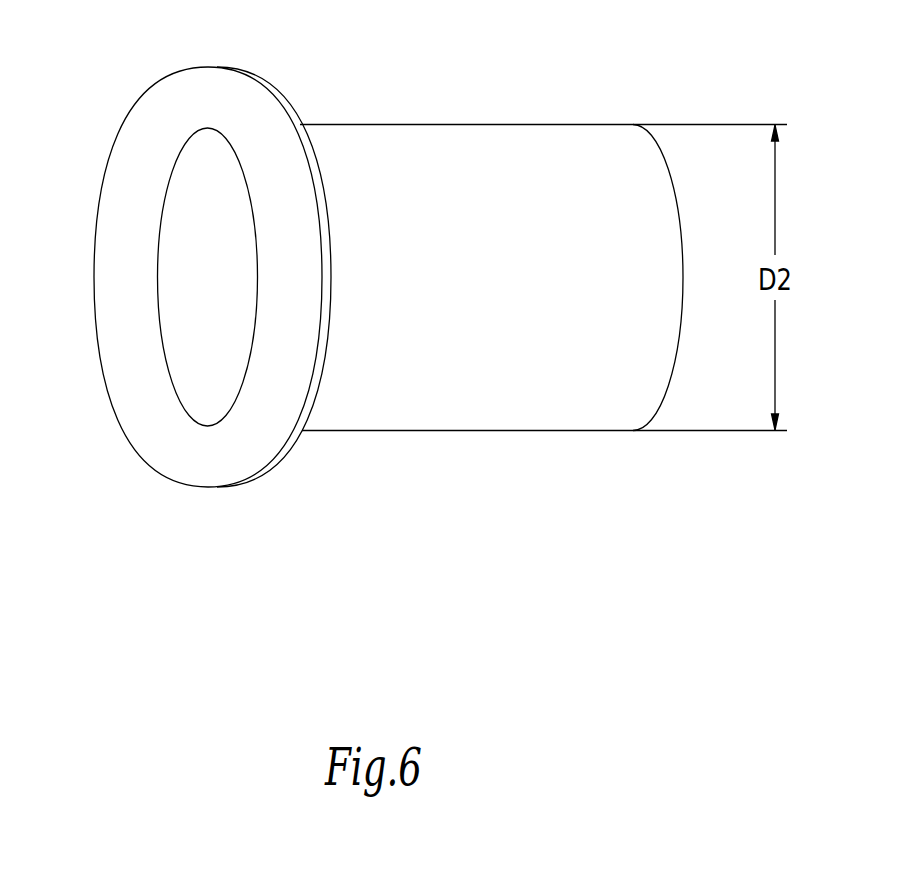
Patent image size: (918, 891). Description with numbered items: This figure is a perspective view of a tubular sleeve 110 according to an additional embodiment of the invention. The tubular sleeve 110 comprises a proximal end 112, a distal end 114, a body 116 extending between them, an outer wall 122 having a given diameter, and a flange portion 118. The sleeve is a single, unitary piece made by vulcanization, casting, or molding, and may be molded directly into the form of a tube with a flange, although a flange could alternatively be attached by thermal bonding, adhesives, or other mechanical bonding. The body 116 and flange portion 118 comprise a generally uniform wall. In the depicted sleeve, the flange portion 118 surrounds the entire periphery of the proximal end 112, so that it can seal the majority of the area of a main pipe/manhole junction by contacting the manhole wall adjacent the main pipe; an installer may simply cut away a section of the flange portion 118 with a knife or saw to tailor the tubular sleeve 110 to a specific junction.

The tubular sleeve 110 is at (569, 50).
The proximal end 112 is at (115, 100).
The distal end 114 is at (672, 178).
The body 116 is at (455, 134).
The flange portion 118 is at (120, 157).
The outer wall 122 is at (498, 412).